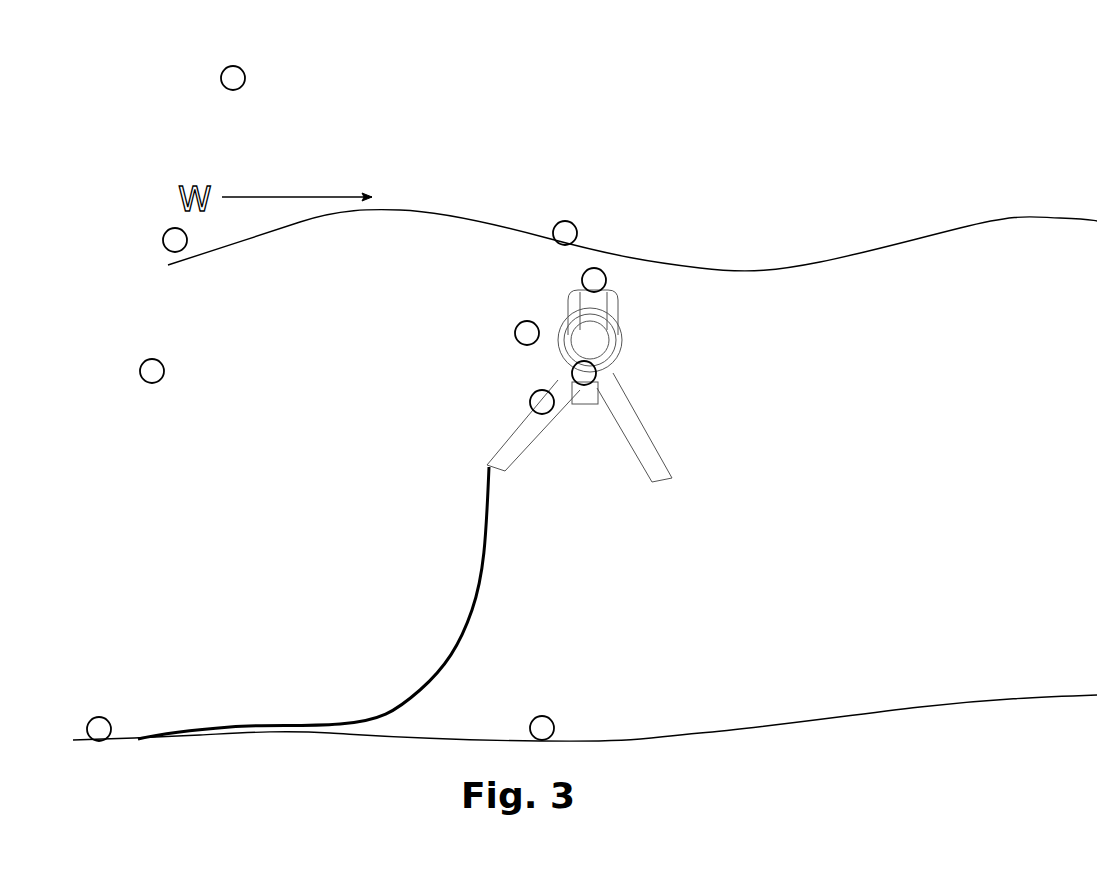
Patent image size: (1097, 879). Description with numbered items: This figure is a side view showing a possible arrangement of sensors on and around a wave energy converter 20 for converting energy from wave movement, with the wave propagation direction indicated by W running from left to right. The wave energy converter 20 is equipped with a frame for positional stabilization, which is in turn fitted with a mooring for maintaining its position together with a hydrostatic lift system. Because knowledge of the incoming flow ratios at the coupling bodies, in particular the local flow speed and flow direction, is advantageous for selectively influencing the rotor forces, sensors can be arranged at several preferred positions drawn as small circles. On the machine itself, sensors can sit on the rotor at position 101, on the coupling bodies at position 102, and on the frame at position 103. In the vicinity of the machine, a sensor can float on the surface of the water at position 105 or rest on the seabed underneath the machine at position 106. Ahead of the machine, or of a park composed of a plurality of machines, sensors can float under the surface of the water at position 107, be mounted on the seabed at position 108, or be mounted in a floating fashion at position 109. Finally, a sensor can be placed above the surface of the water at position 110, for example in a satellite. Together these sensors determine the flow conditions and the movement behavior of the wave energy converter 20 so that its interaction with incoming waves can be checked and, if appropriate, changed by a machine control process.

The wave energy converter 20 is at (633, 326).
The rotor sensor position 101 is at (597, 373).
The coupling body sensor position 102 is at (601, 270).
The frame sensor position 103 is at (535, 392).
The water surface sensor position 105 is at (556, 223).
The seabed sensor position 106 is at (551, 718).
The floating subsurface sensor position ahead of machine 107 is at (161, 380).
The seabed sensor position ahead of machine 108 is at (107, 719).
The floating sensor position ahead of machine 109 is at (166, 229).
The above-water sensor position 110 is at (241, 87).